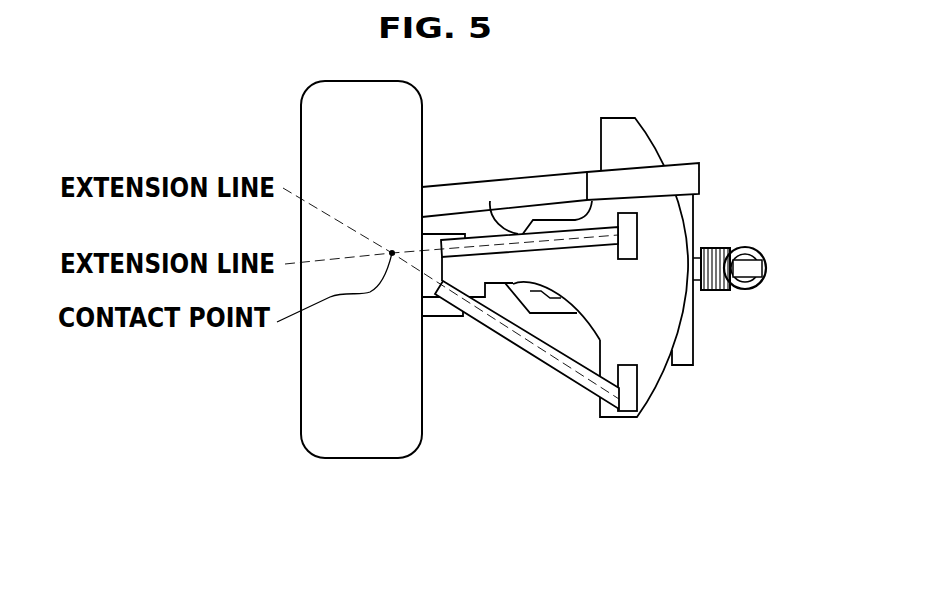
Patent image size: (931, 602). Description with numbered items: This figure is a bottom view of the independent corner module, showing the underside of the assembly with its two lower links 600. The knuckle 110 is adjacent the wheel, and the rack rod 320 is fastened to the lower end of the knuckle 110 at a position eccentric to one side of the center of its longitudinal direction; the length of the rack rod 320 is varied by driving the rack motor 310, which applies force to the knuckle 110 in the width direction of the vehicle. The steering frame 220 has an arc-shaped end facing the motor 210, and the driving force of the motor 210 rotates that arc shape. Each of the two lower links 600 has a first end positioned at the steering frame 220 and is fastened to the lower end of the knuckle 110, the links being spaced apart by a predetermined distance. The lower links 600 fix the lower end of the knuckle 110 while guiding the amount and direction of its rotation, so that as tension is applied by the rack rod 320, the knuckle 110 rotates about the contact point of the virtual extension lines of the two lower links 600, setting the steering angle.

The knuckle 110 is at (427, 316).
The motor 210 is at (752, 244).
The steering frame 220 is at (672, 323).
The rack motor 310 is at (684, 172).
The rack rod 320 is at (565, 183).
The lower links 600 is at (508, 240).